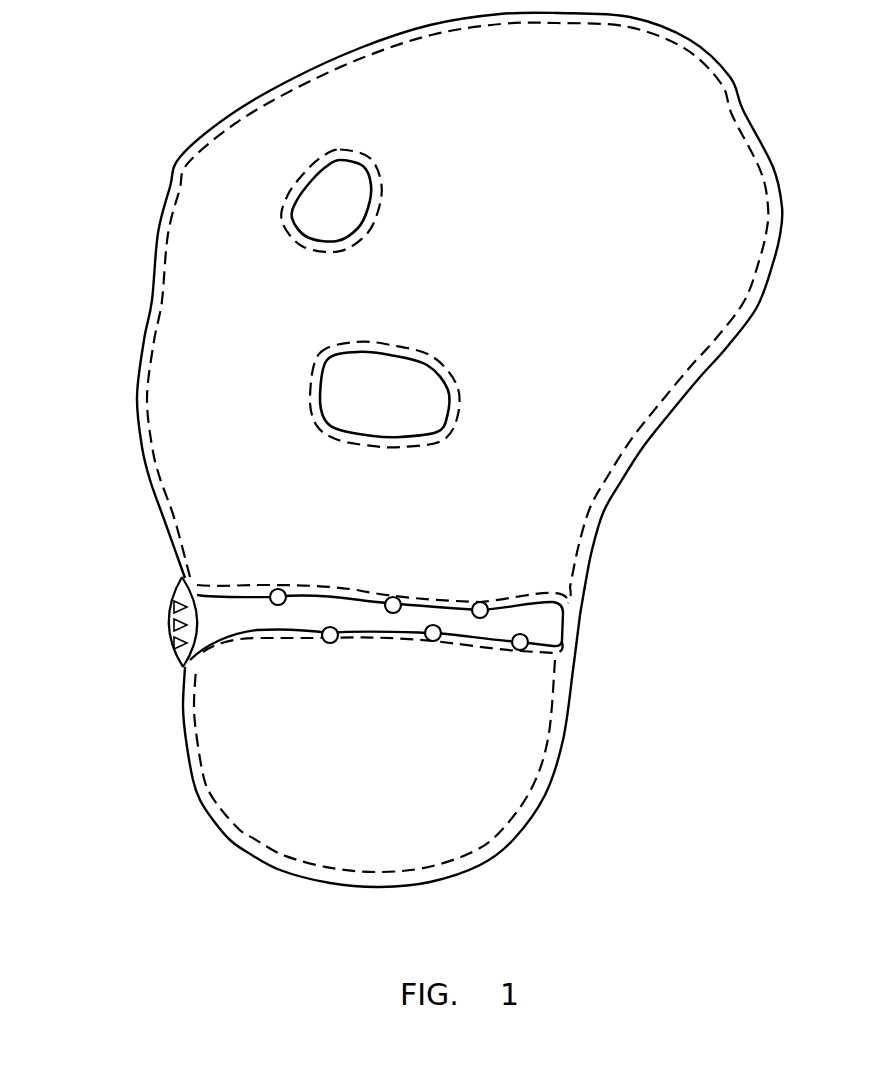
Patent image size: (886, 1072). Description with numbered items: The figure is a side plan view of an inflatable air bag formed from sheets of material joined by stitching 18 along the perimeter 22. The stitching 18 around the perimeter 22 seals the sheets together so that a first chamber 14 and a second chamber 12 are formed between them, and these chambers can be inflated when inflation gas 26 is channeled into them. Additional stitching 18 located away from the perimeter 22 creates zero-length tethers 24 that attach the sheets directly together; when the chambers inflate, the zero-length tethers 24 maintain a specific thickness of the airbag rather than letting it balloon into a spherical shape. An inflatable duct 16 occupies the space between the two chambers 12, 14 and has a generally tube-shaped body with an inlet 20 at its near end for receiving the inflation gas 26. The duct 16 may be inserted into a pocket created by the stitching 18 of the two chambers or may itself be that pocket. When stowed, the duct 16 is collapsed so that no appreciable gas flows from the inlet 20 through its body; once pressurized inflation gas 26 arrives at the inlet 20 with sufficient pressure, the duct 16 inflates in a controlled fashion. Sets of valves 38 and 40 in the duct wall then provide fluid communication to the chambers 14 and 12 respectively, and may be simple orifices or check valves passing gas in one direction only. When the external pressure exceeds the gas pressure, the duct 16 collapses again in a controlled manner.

The first inflatable chamber 12 is at (378, 772).
The second inflatable chamber 14 is at (396, 284).
The inflatable duct 16 is at (320, 625).
The stitching 18 is at (740, 124).
The inlet 20 is at (203, 618).
The perimeter 22 is at (192, 785).
The zero-length tethers 24 is at (425, 345).
The inflation gas 26 is at (173, 606).
The valves 38 is at (473, 602).
The valves 40 is at (510, 650).